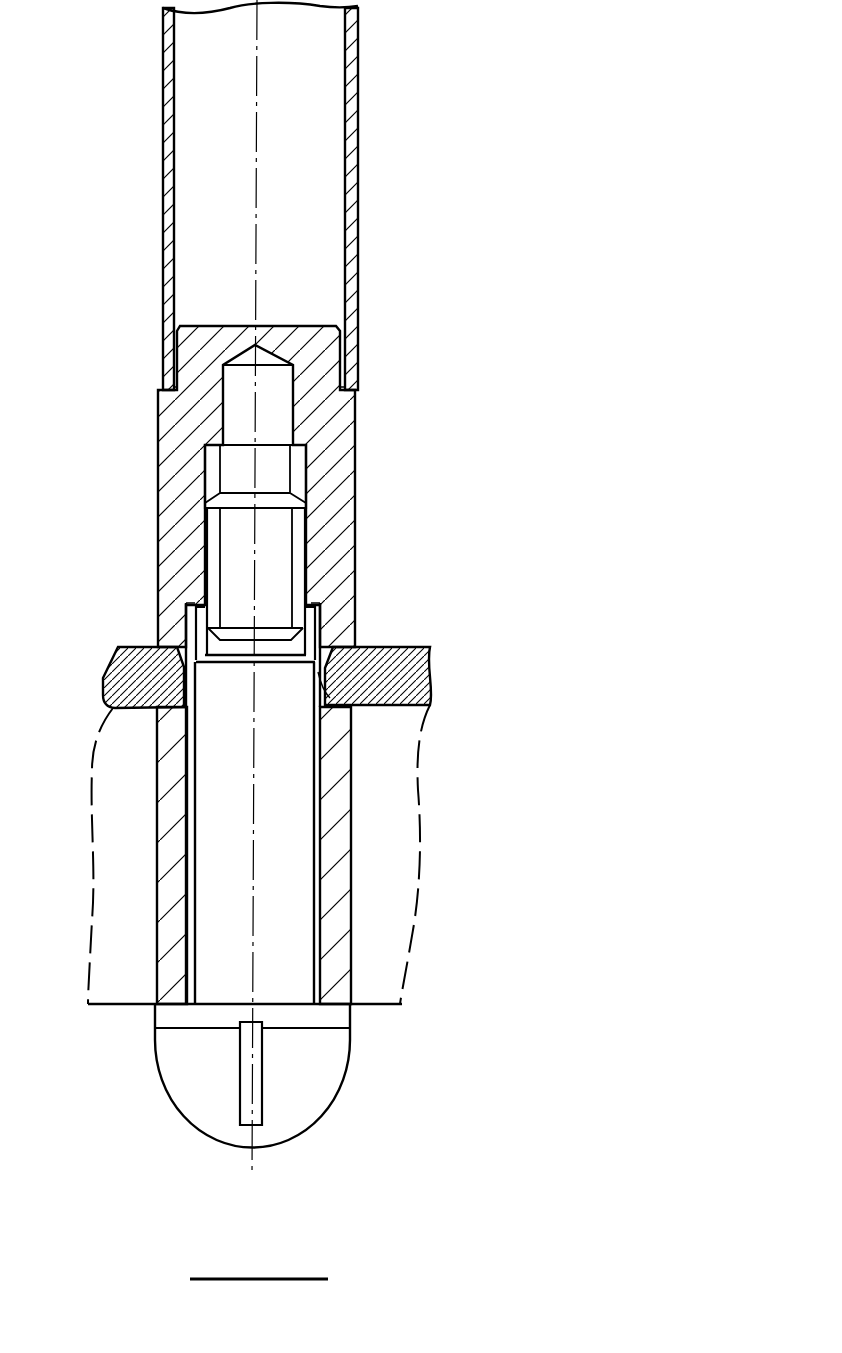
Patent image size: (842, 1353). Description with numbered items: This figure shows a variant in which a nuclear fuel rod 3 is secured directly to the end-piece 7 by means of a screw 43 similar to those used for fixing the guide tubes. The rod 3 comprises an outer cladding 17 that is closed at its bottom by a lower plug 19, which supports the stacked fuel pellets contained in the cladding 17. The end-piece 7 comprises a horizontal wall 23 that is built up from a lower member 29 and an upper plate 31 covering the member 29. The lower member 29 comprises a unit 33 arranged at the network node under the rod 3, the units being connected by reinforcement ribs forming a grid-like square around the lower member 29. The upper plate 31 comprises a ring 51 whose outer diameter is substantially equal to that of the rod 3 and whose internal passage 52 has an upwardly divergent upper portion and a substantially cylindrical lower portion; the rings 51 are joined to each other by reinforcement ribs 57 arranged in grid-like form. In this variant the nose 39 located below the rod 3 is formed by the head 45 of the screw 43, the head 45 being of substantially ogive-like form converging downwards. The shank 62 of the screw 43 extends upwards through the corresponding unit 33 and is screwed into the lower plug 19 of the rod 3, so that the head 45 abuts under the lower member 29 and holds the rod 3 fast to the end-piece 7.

The nuclear fuel rod 3 is at (362, 212).
The end-piece 7 is at (543, 873).
The outer cladding 17 is at (352, 130).
The lower plug 19 is at (332, 520).
The horizontal wall 23 is at (583, 808).
The lower member 29 is at (433, 847).
The upper plate 31 is at (448, 612).
The unit 33 is at (328, 807).
The nose 39 is at (297, 1080).
The screw 43 is at (137, 1108).
The head 45 is at (210, 1115).
The ring 51 is at (343, 662).
The internal passage 52 is at (332, 722).
The reinforcement rib 57 is at (118, 682).
The shank 62 is at (240, 733).